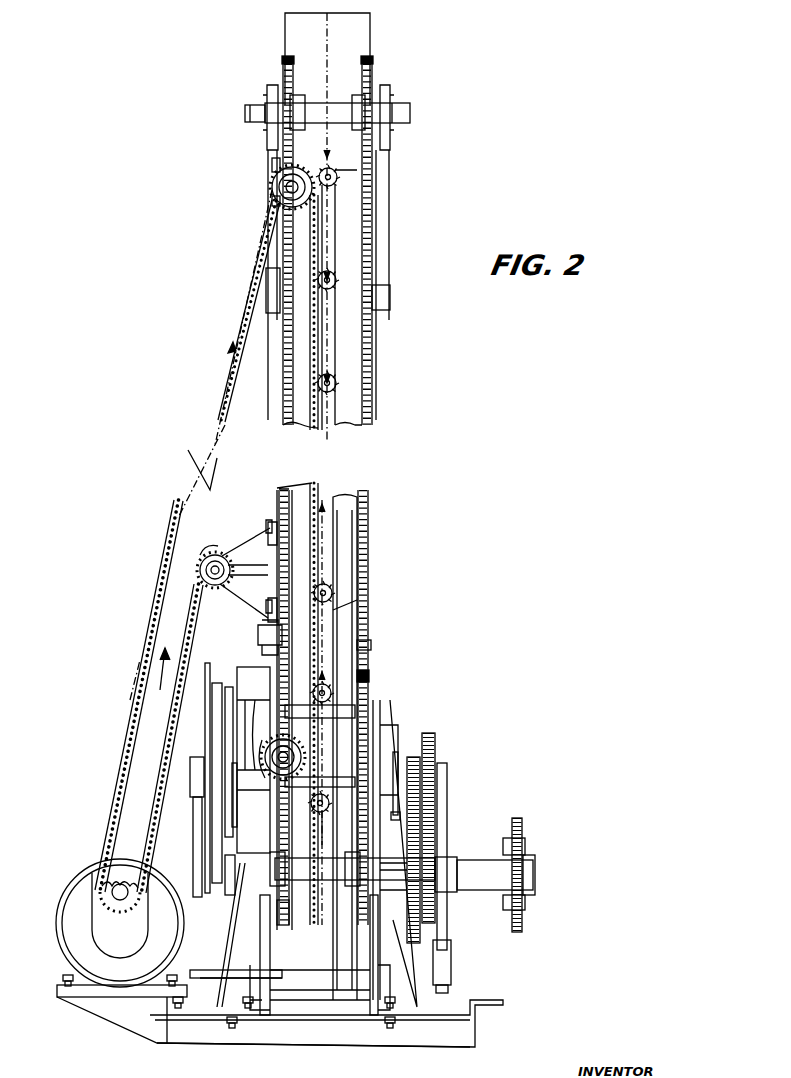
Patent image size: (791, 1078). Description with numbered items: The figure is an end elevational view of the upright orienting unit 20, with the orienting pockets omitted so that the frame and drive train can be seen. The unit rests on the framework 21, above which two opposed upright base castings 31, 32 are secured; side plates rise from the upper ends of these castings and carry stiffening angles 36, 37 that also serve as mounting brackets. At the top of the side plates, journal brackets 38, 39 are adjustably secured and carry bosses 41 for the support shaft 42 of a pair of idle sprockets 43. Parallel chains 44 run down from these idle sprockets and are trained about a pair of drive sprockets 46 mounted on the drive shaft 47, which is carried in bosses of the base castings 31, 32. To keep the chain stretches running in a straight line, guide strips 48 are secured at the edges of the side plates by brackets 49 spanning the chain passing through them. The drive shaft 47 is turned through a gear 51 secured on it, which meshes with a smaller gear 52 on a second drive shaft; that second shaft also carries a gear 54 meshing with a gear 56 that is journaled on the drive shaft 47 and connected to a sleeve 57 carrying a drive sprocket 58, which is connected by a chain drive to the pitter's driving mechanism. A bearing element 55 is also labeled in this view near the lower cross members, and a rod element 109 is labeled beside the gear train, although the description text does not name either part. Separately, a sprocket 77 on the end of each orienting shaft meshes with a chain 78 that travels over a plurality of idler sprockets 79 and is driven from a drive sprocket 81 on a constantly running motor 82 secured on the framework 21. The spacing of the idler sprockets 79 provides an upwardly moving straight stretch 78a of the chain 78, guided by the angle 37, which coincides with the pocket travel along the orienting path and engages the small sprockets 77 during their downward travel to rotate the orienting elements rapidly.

The orienting unit 20 is at (380, 605).
The framework 21 is at (368, 1050).
The base casting 31 is at (370, 940).
The base casting 32 is at (270, 957).
The stiffening angle 36 is at (356, 352).
The stiffening angle 37 is at (283, 388).
The journal bracket 38 is at (384, 212).
The journal bracket 39 is at (270, 147).
The boss 41 is at (271, 95).
The support shaft 42 is at (405, 112).
The idle sprocket 43 is at (297, 100).
The chain 44 is at (283, 66).
The drive sprocket 46 is at (290, 880).
The drive shaft 47 is at (325, 885).
The guide strip 48 is at (364, 505).
The bracket 49 is at (371, 648).
The gear 51 is at (408, 908).
The gear 52 is at (411, 757).
The gear 54 is at (432, 748).
The bearing 55 is at (303, 787).
The gear 56 is at (440, 845).
The sleeve 57 is at (478, 883).
The drive sprocket 58 is at (522, 832).
The sprocket 77 is at (329, 588).
The chain 78 is at (170, 546).
The straight stretch 78a is at (317, 520).
The idler sprocket 79 is at (215, 552).
The drive sprocket 81 is at (122, 880).
The motor 82 is at (62, 903).
The rod 109 is at (396, 752).